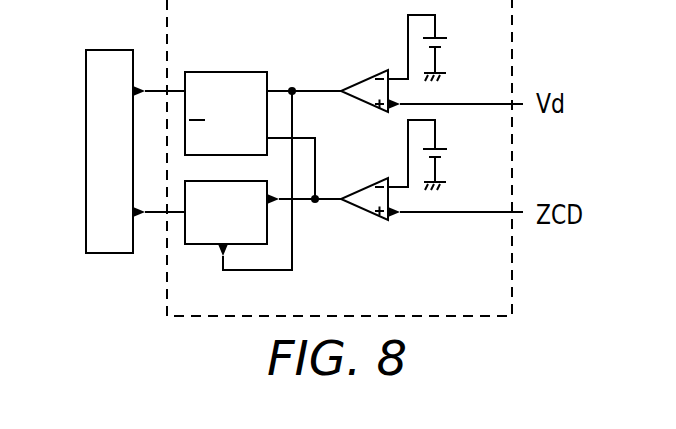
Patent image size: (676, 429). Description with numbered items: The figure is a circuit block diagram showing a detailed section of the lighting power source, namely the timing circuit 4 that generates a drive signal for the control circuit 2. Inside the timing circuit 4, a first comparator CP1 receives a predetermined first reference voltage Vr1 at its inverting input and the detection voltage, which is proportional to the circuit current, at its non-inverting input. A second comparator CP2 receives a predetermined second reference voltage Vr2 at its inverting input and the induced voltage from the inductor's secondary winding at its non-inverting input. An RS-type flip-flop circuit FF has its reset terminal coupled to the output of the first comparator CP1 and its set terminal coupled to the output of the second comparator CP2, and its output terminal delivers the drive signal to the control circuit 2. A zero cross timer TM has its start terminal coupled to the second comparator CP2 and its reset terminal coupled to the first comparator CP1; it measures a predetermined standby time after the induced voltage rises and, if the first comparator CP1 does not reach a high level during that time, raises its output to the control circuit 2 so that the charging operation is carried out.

The control circuit 2 is at (110, 50).
The timing circuit 4 is at (512, 60).
The RS-type flip-flop circuit FF is at (218, 72).
The zero cross timer TM is at (207, 244).
The first comparator CP1 is at (357, 79).
The second comparator CP2 is at (357, 185).
The first reference voltage Vr1 is at (439, 44).
The second reference voltage Vr2 is at (439, 153).